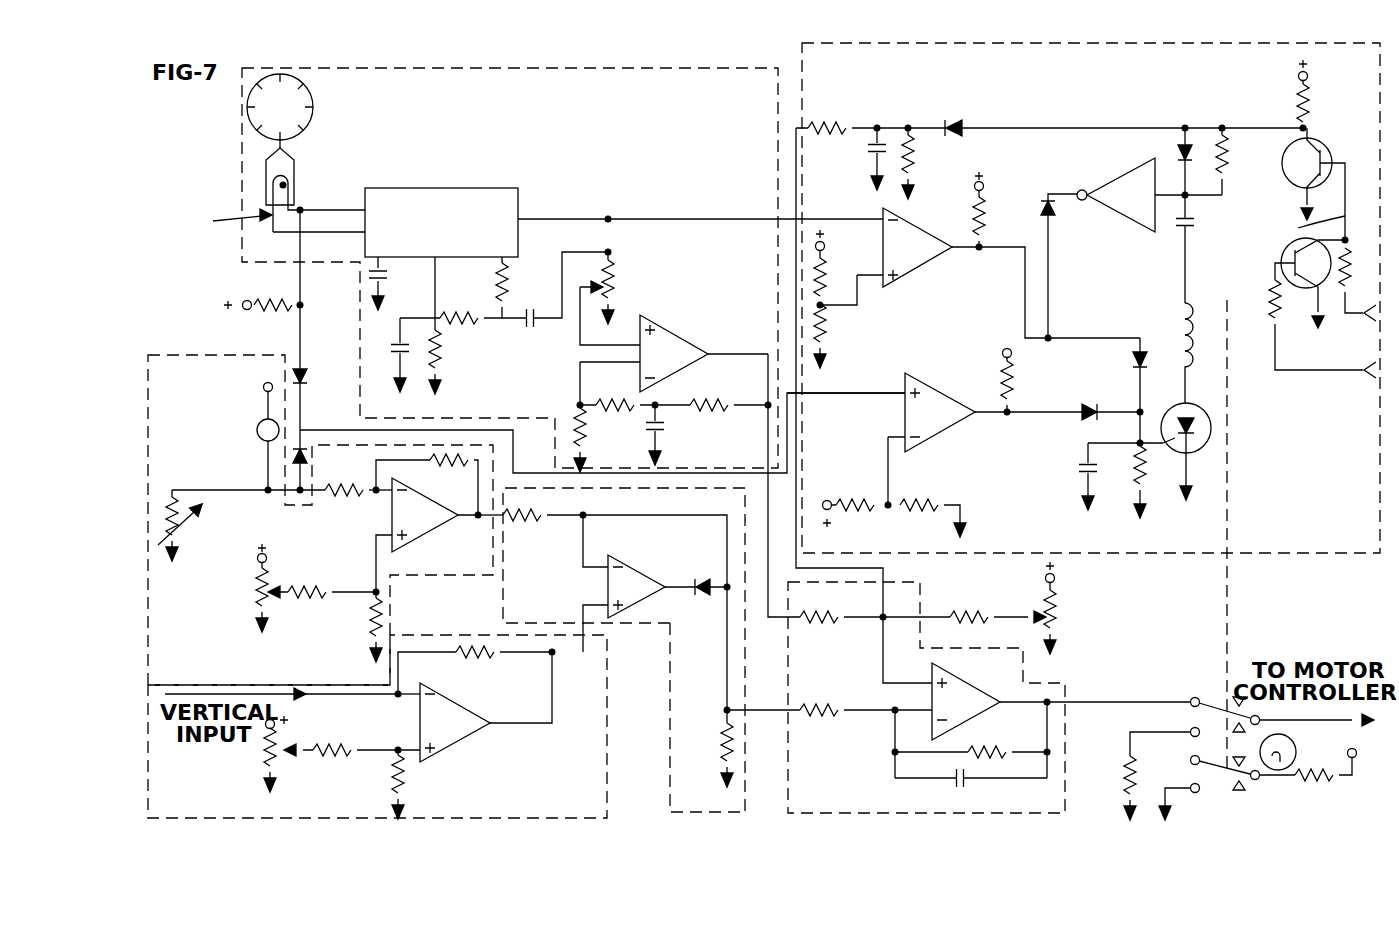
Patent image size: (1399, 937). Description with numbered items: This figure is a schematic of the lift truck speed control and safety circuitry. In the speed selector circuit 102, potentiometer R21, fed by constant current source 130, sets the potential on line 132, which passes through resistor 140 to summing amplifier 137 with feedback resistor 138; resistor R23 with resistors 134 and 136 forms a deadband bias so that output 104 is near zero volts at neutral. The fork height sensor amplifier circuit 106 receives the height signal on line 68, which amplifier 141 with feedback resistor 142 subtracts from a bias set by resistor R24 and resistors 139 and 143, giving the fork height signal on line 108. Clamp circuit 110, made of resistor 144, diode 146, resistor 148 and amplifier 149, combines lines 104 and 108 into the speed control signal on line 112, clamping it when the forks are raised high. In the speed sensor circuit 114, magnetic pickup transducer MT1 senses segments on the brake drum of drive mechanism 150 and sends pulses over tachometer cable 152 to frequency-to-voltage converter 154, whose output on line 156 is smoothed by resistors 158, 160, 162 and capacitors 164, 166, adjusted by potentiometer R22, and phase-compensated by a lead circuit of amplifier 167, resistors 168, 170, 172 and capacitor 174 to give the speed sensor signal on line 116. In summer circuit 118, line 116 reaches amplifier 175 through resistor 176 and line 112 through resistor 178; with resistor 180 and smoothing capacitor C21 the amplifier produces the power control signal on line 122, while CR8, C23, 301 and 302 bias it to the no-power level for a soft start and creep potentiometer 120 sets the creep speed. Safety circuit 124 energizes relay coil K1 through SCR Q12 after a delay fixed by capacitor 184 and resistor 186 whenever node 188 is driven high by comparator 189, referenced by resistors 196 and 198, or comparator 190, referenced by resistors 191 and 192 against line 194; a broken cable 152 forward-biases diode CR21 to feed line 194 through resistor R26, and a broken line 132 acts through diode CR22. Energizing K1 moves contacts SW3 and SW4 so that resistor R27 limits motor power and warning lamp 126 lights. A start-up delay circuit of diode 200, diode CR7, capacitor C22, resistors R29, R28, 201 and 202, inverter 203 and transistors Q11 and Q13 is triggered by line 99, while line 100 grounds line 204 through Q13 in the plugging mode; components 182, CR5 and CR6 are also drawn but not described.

The line 68 is at (352, 697).
The line 99 is at (1365, 329).
The line 100 is at (1322, 372).
The speed selector circuit 102 is at (467, 578).
The output line 104 is at (491, 518).
The fork height sensor amplifier circuit 106 is at (607, 798).
The line 108 is at (590, 625).
The clamp circuit 110 is at (670, 680).
The line 112 is at (750, 712).
The speed sensor circuit 114 is at (242, 172).
The line 116 is at (774, 504).
The summer circuit 118 is at (898, 582).
The creep potentiometer 120 is at (1058, 605).
The line 122 is at (1085, 702).
The safety circuit 124 is at (1285, 553).
The warning indicator lamp 126 is at (1290, 750).
The constant current source 130 is at (256, 432).
The line 132 is at (228, 492).
The resistor 134 is at (320, 578).
The resistor 136 is at (370, 630).
The summing amplifier 137 is at (432, 520).
The feedback resistor 138 is at (428, 462).
The resistor 139 is at (323, 756).
The resistor 140 is at (335, 494).
The amplifier 141 is at (459, 725).
The feedback resistor 142 is at (478, 658).
The resistor 143 is at (403, 785).
The resistor 144 is at (522, 518).
The diode 146 is at (702, 580).
The resistor 148 is at (722, 748).
The amplifier 149 is at (648, 590).
The truck drive mechanism 150 is at (314, 101).
The tachometer cable 152 is at (223, 222).
The frequency-to-voltage converter 154 is at (455, 188).
The line 156 is at (560, 219).
The resistor 158 is at (461, 356).
The resistor 160 is at (462, 308).
The resistor 162 is at (507, 300).
The capacitor 164 is at (394, 346).
The capacitor 166 is at (528, 325).
The amplifier 167 is at (676, 358).
The resistor 168 is at (584, 438).
The resistor 170 is at (627, 388).
The resistor 172 is at (706, 410).
The capacitor 174 is at (665, 433).
The amplifier 175 is at (968, 692).
The resistor 176 is at (815, 625).
The resistor 178 is at (866, 698).
The resistor 180 is at (985, 752).
The resistor 182 is at (955, 611).
The capacitor 184 is at (1080, 465).
The resistor 186 is at (1140, 484).
The node 188 is at (1148, 390).
The comparator 189 is at (920, 248).
The comparator 190 is at (945, 410).
The resistor 191 is at (922, 505).
The resistor 192 is at (855, 499).
The line 194 is at (880, 398).
The resistor 196 is at (823, 266).
The resistor 198 is at (826, 340).
The diode 200 is at (1055, 206).
The resistor 201 is at (1268, 312).
The resistor 202 is at (1340, 305).
The inverter 203 is at (1140, 198).
The line 204 is at (1301, 224).
The soft start bias element 301 is at (914, 156).
The soft start bias element 302 is at (850, 106).
The magnetic pickup transducer MT1 is at (315, 190).
The variable potentiometer R21 is at (196, 525).
The potentiometer R22 is at (626, 297).
The resistor R23 is at (240, 588).
The resistor R24 is at (253, 754).
The resistor R26 is at (264, 292).
The resistor R27 is at (1108, 788).
The resistor R28 is at (1310, 100).
The resistor R29 is at (1225, 164).
The diode CR5 is at (1112, 377).
The diode CR6 is at (1101, 423).
The diode CR7 is at (1180, 166).
The soft start bias element CR8 is at (946, 124).
The diode CR21 is at (307, 368).
The diode CR22 is at (302, 440).
The smoothing capacitor C21 is at (960, 780).
The capacitor C22 is at (1190, 222).
The capacitor C23 is at (865, 152).
The relay coil K1 is at (1179, 353).
The transistor Q11 is at (1325, 150).
The SCR Q12 is at (1170, 448).
The transistor Q13 is at (1292, 249).
The relay contact SW3 is at (1252, 726).
The relay contact SW4 is at (1223, 788).